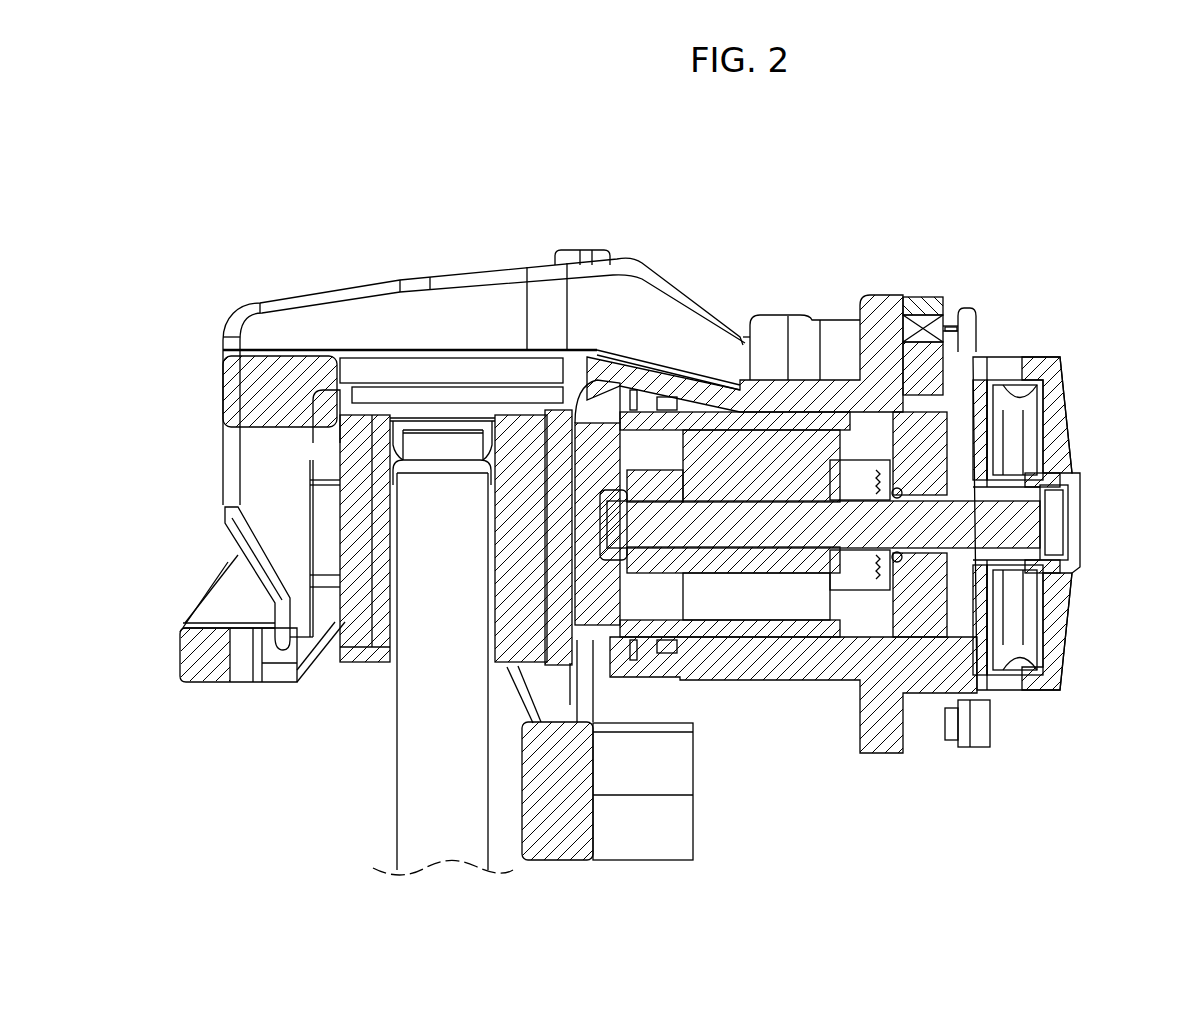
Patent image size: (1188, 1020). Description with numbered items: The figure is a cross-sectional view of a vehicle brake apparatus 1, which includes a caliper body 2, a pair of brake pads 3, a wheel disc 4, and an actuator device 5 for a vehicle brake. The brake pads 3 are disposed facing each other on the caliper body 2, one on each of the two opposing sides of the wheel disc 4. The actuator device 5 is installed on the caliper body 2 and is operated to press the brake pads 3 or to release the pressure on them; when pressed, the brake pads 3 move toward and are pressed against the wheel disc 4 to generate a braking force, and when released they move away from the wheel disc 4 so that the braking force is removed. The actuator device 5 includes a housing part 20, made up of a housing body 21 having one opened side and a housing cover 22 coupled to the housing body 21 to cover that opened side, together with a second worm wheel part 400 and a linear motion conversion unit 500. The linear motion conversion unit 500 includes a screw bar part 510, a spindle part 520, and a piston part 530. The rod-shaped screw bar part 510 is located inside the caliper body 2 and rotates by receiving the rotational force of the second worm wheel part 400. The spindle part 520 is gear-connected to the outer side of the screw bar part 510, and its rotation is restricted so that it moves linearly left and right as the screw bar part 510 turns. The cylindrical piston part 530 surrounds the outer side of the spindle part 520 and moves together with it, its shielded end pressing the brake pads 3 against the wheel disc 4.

The vehicle brake apparatus 1 is at (1160, 154).
The caliper body 2 is at (497, 305).
The brake pads 3 is at (518, 605).
The wheel disc 4 is at (418, 790).
The actuator device for a vehicle brake 5 is at (966, 283).
The housing part 20 is at (1057, 588).
The housing body 21 is at (1007, 688).
The housing cover 22 is at (1038, 688).
The second worm wheel part 400 is at (1032, 402).
The linear motion conversion unit 500 is at (742, 680).
The screw bar part 510 is at (793, 522).
The spindle part 520 is at (740, 485).
The piston part 530 is at (668, 412).